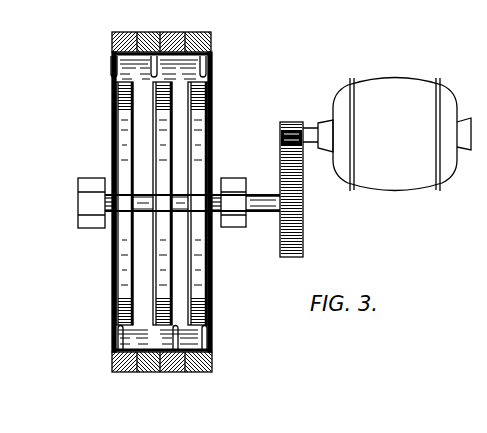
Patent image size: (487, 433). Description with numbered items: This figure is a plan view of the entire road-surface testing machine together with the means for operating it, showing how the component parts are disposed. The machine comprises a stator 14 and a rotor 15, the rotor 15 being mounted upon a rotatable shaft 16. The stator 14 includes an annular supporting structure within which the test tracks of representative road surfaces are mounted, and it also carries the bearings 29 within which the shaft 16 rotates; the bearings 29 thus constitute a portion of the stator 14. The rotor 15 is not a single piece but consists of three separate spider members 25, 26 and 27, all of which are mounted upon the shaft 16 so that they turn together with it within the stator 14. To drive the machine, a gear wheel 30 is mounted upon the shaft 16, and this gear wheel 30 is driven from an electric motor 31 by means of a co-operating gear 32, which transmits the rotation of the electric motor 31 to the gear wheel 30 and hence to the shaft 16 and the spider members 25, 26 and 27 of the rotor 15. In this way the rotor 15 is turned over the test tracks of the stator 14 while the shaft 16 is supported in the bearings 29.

The stator 14 is at (212, 366).
The rotor 15 is at (122, 281).
The rotatable shaft 16 is at (270, 212).
The spider member 25 is at (118, 101).
The spider member 26 is at (163, 102).
The spider member 27 is at (196, 120).
The bearings 29 is at (93, 222).
The gear wheel 30 is at (296, 253).
The electric motor 31 is at (403, 185).
The co-operating gear 32 is at (291, 126).